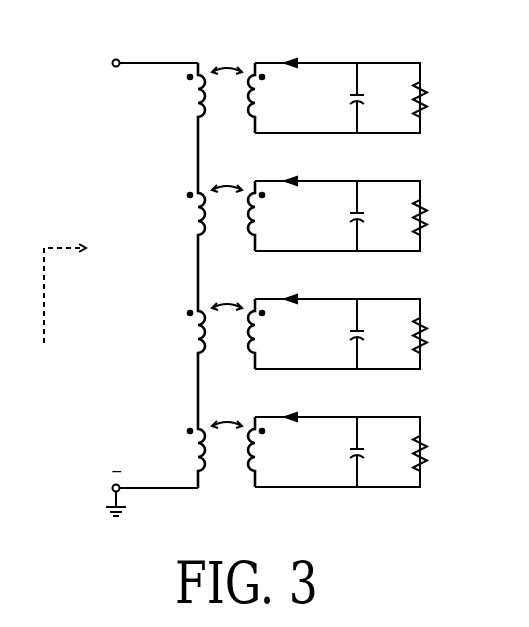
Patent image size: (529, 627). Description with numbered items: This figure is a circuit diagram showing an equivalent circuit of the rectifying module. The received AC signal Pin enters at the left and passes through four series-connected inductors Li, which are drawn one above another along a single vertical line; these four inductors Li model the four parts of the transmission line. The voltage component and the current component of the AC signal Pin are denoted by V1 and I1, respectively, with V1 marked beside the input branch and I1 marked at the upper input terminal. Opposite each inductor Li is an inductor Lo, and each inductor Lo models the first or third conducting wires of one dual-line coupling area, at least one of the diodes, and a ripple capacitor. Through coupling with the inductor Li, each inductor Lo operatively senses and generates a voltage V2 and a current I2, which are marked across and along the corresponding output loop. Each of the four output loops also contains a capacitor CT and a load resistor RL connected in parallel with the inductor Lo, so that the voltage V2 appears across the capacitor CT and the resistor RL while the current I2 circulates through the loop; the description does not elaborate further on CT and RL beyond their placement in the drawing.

The inductor Li is at (182, 275).
The inductor Lo is at (271, 275).
The tuning capacitor CT is at (373, 275).
The load resistor RL is at (435, 275).
The voltage component V1 is at (121, 272).
The voltage V2 is at (337, 275).
The current component I1 is at (153, 58).
The current I2 is at (293, 226).
The AC signal Pin is at (56, 311).